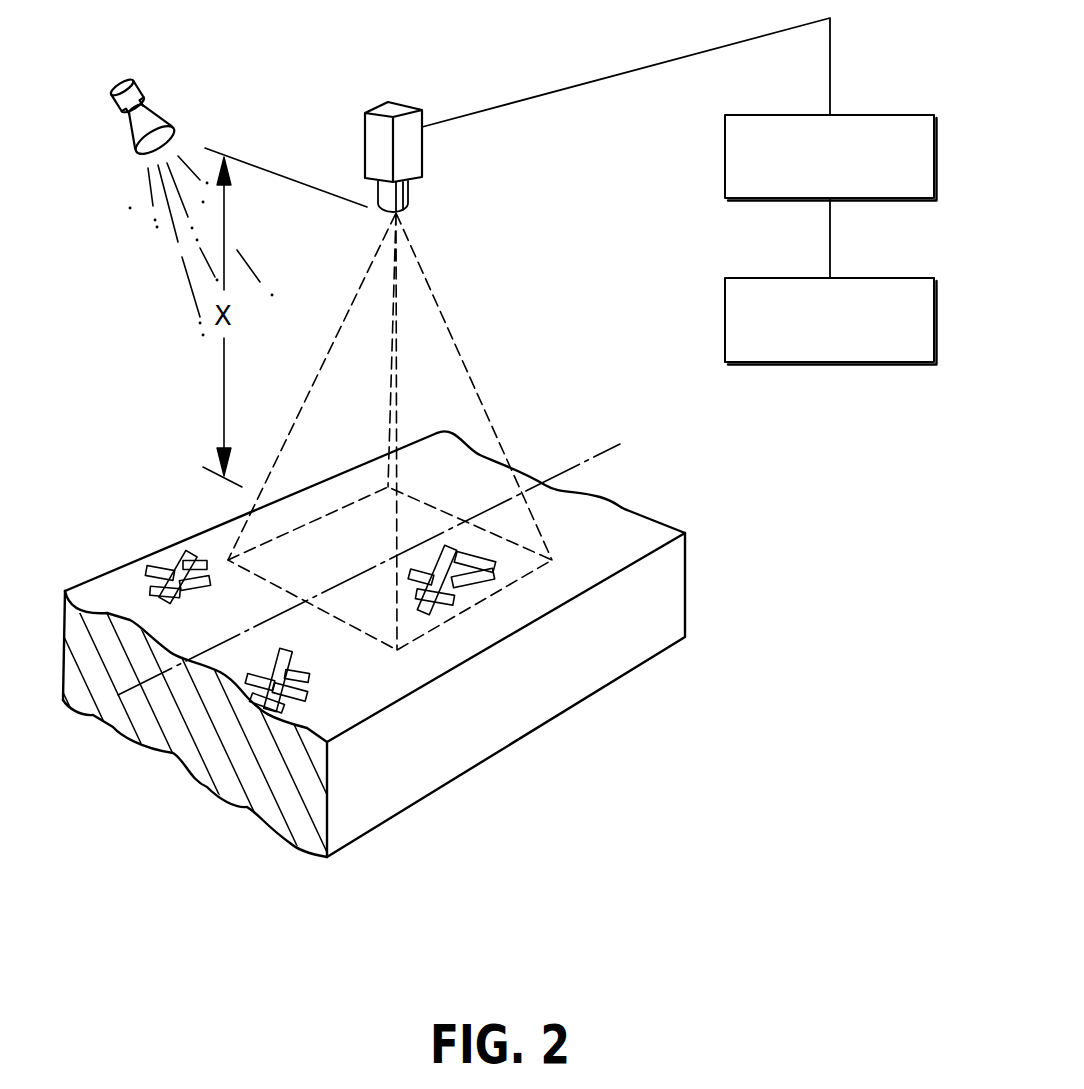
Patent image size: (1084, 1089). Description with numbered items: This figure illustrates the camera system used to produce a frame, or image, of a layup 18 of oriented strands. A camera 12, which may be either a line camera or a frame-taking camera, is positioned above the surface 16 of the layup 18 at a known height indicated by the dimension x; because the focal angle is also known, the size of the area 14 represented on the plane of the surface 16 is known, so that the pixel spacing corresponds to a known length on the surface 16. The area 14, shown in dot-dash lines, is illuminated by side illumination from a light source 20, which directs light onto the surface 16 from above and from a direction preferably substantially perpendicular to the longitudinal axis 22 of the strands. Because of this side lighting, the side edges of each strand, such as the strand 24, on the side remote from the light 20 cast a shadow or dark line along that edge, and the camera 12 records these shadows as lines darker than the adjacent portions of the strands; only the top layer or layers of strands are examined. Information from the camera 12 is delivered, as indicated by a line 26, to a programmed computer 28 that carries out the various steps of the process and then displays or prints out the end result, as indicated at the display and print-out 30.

The camera 12 is at (363, 118).
The area 14 is at (527, 577).
The surface 16 is at (623, 528).
The layup 18 is at (687, 583).
The light source 20 is at (140, 84).
The longitudinal axis 22 is at (598, 456).
The strand 24 is at (457, 590).
The line 26 is at (578, 85).
The programmed computer 28 is at (725, 162).
The display and print-out 30 is at (725, 326).